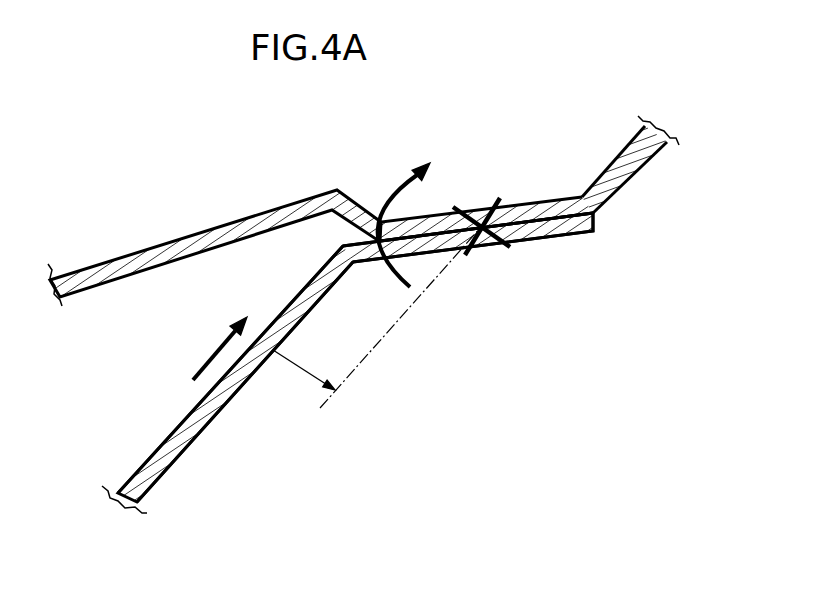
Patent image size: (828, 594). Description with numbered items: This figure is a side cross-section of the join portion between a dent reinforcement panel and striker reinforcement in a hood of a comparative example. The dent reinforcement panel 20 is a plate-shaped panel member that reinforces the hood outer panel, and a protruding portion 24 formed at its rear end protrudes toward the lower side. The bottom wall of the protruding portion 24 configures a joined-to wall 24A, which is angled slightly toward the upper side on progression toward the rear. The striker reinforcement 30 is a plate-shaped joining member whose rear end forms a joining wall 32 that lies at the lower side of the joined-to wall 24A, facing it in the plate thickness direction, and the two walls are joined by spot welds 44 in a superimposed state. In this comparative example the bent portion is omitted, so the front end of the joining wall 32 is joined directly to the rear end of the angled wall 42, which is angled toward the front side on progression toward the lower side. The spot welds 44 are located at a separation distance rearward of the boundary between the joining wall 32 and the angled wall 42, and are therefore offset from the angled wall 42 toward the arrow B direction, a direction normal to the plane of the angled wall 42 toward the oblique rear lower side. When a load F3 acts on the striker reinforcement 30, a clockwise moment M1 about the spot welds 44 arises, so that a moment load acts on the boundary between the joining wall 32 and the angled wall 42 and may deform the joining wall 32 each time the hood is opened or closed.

The dent reinforcement panel 20 is at (203, 223).
The protruding portion 24 is at (548, 173).
The joined-to wall 24A is at (547, 198).
The striker reinforcement 30 is at (347, 392).
The joining wall 32 is at (573, 232).
The angled wall 42 is at (207, 423).
The spot welds 44 is at (482, 208).
The arrow B direction B is at (296, 367).
The load F3 is at (213, 345).
The moment M1 is at (382, 202).